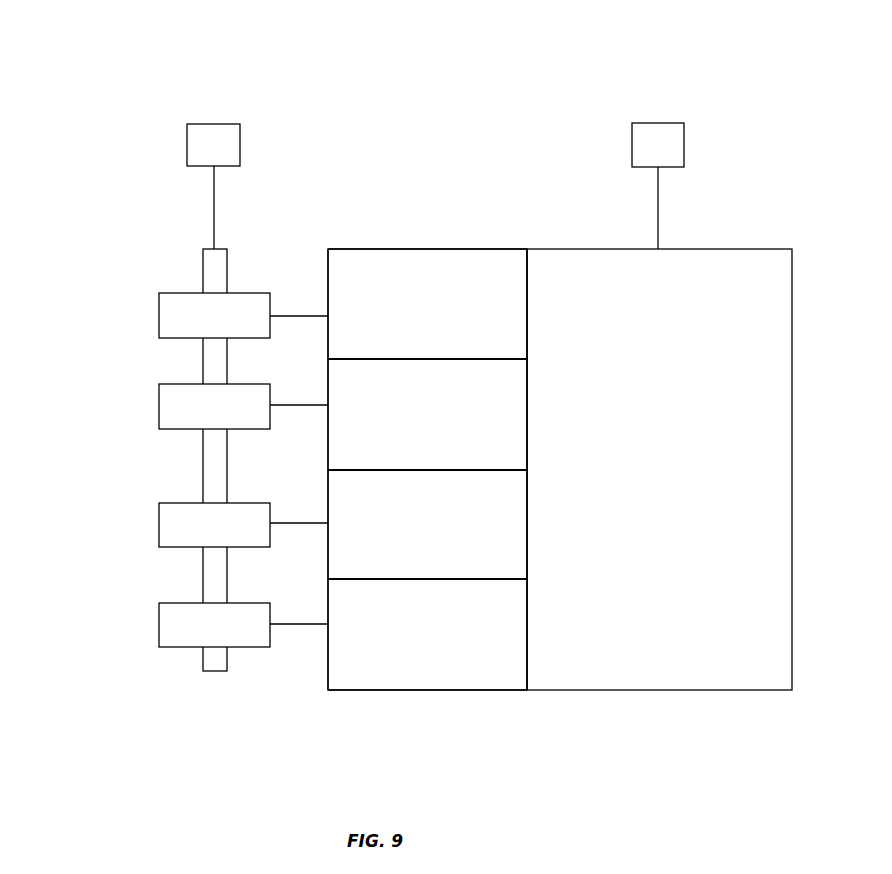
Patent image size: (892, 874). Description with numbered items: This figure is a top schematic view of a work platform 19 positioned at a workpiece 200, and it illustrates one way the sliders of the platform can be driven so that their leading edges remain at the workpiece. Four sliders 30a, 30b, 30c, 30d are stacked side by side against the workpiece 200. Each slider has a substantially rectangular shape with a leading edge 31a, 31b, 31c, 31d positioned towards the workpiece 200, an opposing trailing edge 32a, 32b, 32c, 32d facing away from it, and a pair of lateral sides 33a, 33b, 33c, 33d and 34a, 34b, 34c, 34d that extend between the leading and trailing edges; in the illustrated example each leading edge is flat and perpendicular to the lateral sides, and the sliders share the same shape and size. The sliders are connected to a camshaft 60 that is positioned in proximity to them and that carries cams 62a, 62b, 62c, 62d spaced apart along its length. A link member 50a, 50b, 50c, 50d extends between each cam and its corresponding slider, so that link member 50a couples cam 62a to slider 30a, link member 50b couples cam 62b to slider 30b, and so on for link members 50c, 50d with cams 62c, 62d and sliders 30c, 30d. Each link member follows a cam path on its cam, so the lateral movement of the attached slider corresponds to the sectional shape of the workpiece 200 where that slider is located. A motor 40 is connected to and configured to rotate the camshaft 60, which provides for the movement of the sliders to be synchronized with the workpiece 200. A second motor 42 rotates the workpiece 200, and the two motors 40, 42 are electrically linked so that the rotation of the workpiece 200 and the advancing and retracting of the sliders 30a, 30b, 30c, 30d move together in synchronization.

The work platform 19 is at (290, 112).
The motor 40 is at (202, 155).
The motor 42 is at (647, 155).
The camshaft 60 is at (215, 362).
The cam 62a is at (185, 300).
The cam 62b is at (185, 400).
The cam 62c is at (185, 510).
The cam 62d is at (185, 610).
The link member 50a is at (304, 314).
The link member 50b is at (304, 403).
The link member 50c is at (304, 521).
The link member 50d is at (304, 622).
The workpiece 200 is at (643, 450).
The slider 30a is at (406, 307).
The slider 30b is at (406, 428).
The slider 30c is at (406, 538).
The slider 30d is at (406, 648).
The leading edge 31a is at (527, 282).
The leading edge 31b is at (527, 443).
The leading edge 31c is at (527, 558).
The leading edge 31d is at (527, 668).
The trailing edge 32a is at (330, 298).
The trailing edge 32b is at (330, 392).
The trailing edge 32c is at (330, 515).
The trailing edge 32d is at (330, 623).
The lateral side 33a is at (413, 249).
The lateral side 33b is at (447, 361).
The lateral side 33c is at (422, 472).
The lateral side 33d is at (420, 581).
The lateral side 34a is at (407, 359).
The lateral side 34b is at (373, 470).
The lateral side 34c is at (445, 579).
The lateral side 34d is at (445, 690).